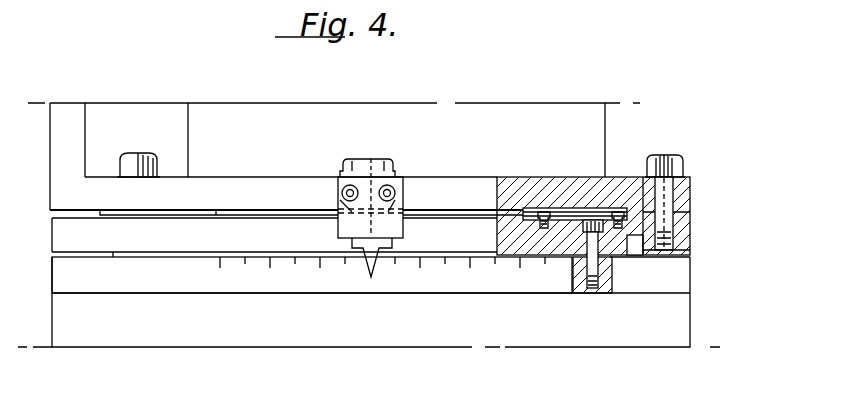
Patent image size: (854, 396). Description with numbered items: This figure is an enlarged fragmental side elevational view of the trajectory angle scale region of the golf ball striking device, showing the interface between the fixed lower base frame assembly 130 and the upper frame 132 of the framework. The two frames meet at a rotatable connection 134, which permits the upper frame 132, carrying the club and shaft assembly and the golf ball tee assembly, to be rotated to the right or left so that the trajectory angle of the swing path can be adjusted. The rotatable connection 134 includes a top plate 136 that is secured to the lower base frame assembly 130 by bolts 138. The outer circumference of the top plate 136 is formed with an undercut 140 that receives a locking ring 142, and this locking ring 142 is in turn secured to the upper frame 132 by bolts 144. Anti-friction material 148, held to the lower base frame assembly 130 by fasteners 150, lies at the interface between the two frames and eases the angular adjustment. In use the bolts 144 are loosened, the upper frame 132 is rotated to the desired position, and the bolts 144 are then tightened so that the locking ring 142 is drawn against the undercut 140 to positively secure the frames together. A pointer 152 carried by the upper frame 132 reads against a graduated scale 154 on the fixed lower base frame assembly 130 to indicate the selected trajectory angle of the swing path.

The fixed lower base frame assembly 130 is at (660, 324).
The upper frame 132 is at (590, 122).
The rotatable connection 134 is at (698, 212).
The top plate 136 is at (630, 256).
The bolts 138 is at (600, 210).
The undercut 140 is at (376, 152).
The locking ring 142 is at (690, 232).
The bolts 144 is at (681, 159).
The anti-friction material 148 is at (568, 210).
The fasteners 150 is at (523, 210).
The pointer 152 is at (338, 200).
The scale 154 is at (340, 278).